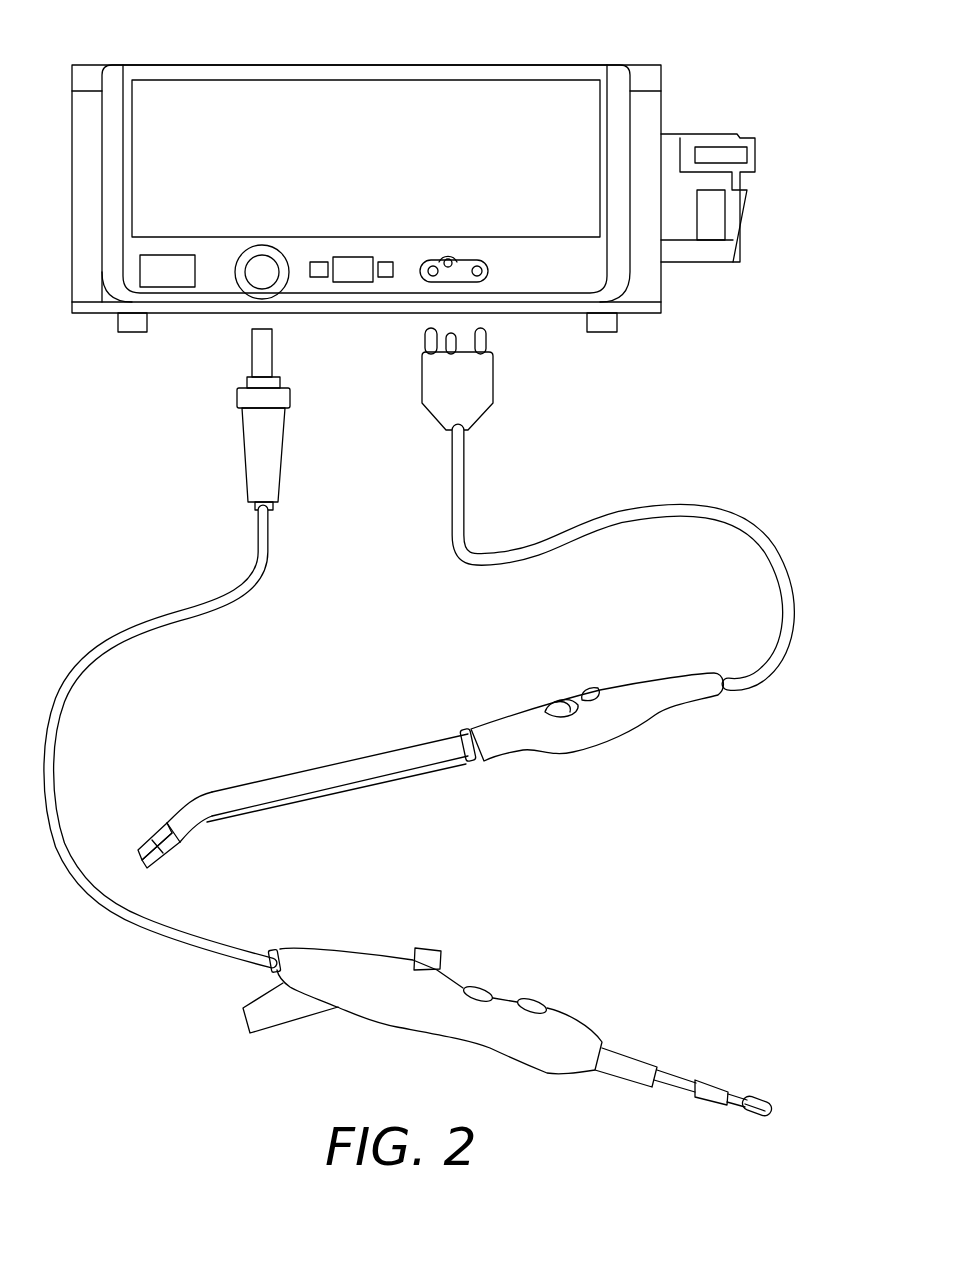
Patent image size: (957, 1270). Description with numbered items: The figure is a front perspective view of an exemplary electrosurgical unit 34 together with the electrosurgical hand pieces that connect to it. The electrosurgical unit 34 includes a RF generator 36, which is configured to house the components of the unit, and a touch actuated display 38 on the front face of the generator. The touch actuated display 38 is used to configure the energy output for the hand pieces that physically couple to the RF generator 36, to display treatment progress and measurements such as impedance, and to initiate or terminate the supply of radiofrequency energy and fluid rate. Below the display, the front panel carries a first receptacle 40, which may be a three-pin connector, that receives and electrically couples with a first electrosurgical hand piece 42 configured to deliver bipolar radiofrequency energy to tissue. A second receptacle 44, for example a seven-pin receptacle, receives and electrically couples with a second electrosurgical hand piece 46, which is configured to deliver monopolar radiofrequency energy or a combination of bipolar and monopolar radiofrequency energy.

The electrosurgical unit 34 is at (396, 205).
The RF generator 36 is at (92, 292).
The touch actuated display 38 is at (361, 149).
The first receptacle 40 is at (466, 277).
The first electrosurgical hand piece 42 is at (622, 742).
The second receptacle 44 is at (262, 274).
The second electrosurgical hand piece 46 is at (573, 1037).